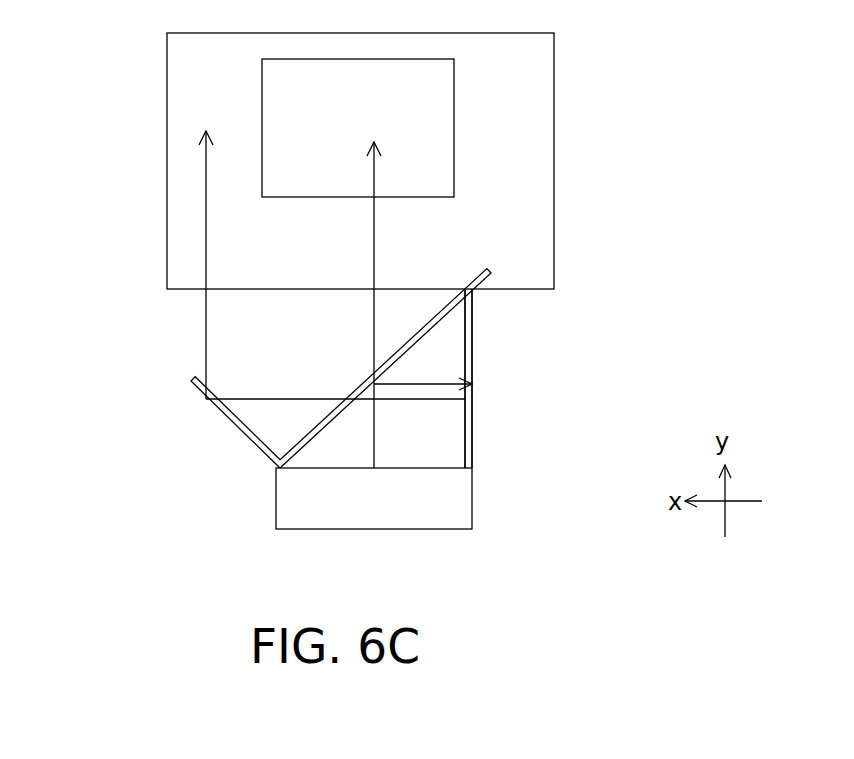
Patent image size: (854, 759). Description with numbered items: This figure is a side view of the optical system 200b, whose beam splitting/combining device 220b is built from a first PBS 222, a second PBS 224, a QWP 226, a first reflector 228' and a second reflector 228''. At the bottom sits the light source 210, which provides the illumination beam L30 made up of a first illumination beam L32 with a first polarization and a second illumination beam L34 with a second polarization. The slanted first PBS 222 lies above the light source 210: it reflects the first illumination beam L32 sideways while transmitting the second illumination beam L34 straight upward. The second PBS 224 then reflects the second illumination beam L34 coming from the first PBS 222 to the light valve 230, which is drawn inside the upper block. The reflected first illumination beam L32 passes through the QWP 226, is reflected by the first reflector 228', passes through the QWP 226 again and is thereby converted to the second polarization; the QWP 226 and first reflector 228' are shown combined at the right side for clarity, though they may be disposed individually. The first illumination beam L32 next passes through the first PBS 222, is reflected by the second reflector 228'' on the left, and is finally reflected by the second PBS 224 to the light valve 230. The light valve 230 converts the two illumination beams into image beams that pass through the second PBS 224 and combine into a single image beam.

The second polarizing beam splitter 224 is at (521, 177).
The light valve 230 is at (438, 90).
The beam splitting/combining device 220b is at (648, 277).
The first illumination beam L32 is at (206, 330).
The second illumination beam L34 is at (375, 305).
The illumination beam L30 is at (375, 442).
The first polarizing beam splitter 222 is at (427, 337).
The second reflector 228'' is at (194, 422).
The quarter wave plate 226 is at (473, 438).
The first reflector 228' is at (468, 378).
The light source 210 is at (295, 503).
The optical system 200b is at (683, 602).